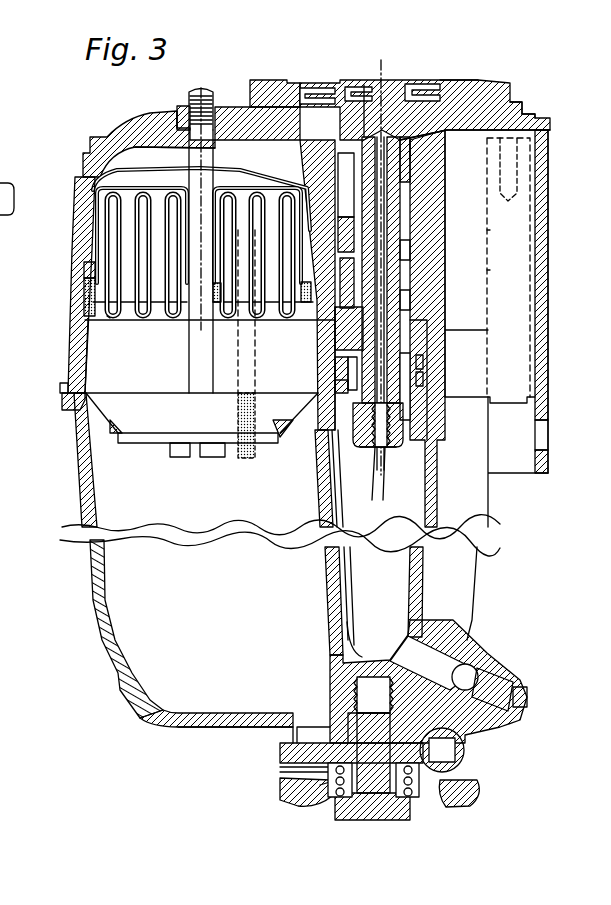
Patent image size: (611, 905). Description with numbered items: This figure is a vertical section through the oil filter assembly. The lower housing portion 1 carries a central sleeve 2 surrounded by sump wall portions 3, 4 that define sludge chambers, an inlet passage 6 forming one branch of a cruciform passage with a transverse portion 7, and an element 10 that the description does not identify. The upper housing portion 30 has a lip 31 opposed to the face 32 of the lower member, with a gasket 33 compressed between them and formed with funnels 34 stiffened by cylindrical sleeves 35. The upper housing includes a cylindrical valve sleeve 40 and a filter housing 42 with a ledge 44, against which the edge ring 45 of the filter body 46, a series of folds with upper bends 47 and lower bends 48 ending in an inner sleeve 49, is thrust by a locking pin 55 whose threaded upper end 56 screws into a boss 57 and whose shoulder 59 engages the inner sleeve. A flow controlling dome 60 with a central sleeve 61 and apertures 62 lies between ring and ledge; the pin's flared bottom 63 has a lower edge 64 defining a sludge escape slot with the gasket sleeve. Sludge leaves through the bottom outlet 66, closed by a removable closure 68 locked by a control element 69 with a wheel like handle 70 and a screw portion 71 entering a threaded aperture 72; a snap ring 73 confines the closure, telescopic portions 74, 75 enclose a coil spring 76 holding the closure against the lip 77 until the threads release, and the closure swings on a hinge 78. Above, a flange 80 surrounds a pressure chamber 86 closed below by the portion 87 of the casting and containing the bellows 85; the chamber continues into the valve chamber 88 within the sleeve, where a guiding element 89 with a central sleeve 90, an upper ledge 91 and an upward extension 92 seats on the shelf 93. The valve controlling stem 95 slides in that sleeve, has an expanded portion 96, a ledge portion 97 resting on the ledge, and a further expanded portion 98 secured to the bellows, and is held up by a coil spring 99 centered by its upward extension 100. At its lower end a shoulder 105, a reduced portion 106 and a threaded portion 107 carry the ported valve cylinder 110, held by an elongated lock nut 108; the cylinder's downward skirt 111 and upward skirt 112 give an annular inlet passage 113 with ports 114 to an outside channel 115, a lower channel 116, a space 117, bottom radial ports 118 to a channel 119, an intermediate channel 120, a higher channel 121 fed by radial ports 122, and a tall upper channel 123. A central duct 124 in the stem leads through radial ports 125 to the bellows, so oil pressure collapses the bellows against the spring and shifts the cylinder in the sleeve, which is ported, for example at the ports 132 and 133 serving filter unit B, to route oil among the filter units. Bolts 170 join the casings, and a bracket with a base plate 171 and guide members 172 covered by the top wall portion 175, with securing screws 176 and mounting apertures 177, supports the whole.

The filter unit B is at (112, 117).
The lower housing portion 1 is at (87, 517).
The central sleeve 2 is at (333, 516).
The sump wall portion 3 is at (473, 547).
The sump wall portion 4 is at (130, 613).
The inlet passage 6 is at (427, 653).
The transverse portion 7 is at (470, 666).
The fitting 10 is at (10, 182).
The upper housing portion 30 is at (73, 332).
The lower edge or lip 31 is at (60, 388).
The upper lip or face 32 is at (64, 402).
The gasket 33 is at (73, 420).
The funnels 34 is at (108, 423).
The reinforcing or stiffening cylindrical sleeves 35 is at (133, 443).
The cylindrical valve sleeve 40 is at (420, 231).
The filter housing 42 is at (95, 365).
The downwardly faced ledge or step 44 is at (88, 274).
The circumferential reinforcing ring or edge ring 45 is at (90, 296).
The filter body 46 is at (97, 231).
The upper bends 47 is at (174, 193).
The lower bends 48 is at (108, 318).
The inner sleeve 49 is at (219, 292).
The supporting and locking pin 55 is at (186, 371).
The screw threaded upper end 56 is at (198, 108).
The boss or downwardly extending sleeve 57 is at (186, 113).
The shoulder 59 is at (193, 323).
The flow controlling dome 60 is at (112, 186).
The central sleeve 61 is at (180, 170).
The apertures 62 is at (177, 163).
The flared bottom 63 is at (190, 412).
The lower edge 64 is at (182, 457).
The bottom outlet 66 is at (313, 727).
The removable closure 68 is at (280, 752).
The control element 69 is at (373, 788).
The wheel like handle 70 is at (278, 790).
The screw portion 71 is at (360, 690).
The threaded aperture 72 is at (380, 676).
The snap ring 73 is at (352, 712).
The telescopic cylindrical portion 74 is at (303, 797).
The telescopic cylindrical portion 75 is at (330, 790).
The coil spring 76 is at (297, 774).
The lip 77 is at (280, 729).
The hinge 78 is at (467, 762).
The circumferential sleeve or flange 80 is at (492, 92).
The bellows 85 is at (447, 84).
The pressure chamber 86 is at (292, 85).
The portion of the top of the casting 87 is at (460, 137).
The valve chamber 88 is at (417, 187).
The guiding element 89 is at (425, 155).
The central sleeve 90 is at (483, 177).
The upper ledge 91 is at (345, 165).
The upward extension 92 is at (225, 178).
The ledge or shelf 93 is at (320, 146).
The valve controlling stem 95 is at (480, 198).
The outwardly expanded portion 96 is at (510, 99).
The ledge portion 97 is at (368, 125).
The further expanded portion 98 is at (314, 105).
The compressed coil spring 99 is at (352, 93).
The upward extension 100 is at (401, 82).
The downward shoulder 105 is at (450, 328).
The lower portion of reduced diameter 106 is at (400, 340).
The screw threaded portion 107 is at (383, 443).
The elongated lock nut 108 is at (410, 440).
The ported valve cylinder 110 is at (483, 330).
The downwardly extending skirt 111 is at (410, 430).
The upwardly extending skirt 112 is at (483, 273).
The annular oil inlet passage 113 is at (428, 415).
The ports 114 is at (488, 353).
The outside channel 115 is at (420, 359).
The outside channel 116 is at (423, 378).
The space 117 is at (488, 232).
The radial ports 118 is at (487, 300).
The exterior circumferential channel 119 is at (416, 309).
The intermediate circumferential channel 120 is at (420, 288).
The higher circumferential channel 121 is at (418, 263).
The radial ports 122 is at (420, 250).
The upper circumferential channel 123 is at (430, 220).
The central longitudinal duct 124 is at (379, 455).
The radially extending ports 125 is at (390, 123).
The port 132 is at (320, 232).
The port 133 is at (317, 383).
The bolts 170 is at (238, 356).
The base plate 171 is at (540, 141).
The partly cylindrical guide and supporting members 172 is at (548, 203).
The top wall portion 175 is at (534, 126).
The securing screws 176 is at (518, 111).
The apertures 177 is at (547, 182).